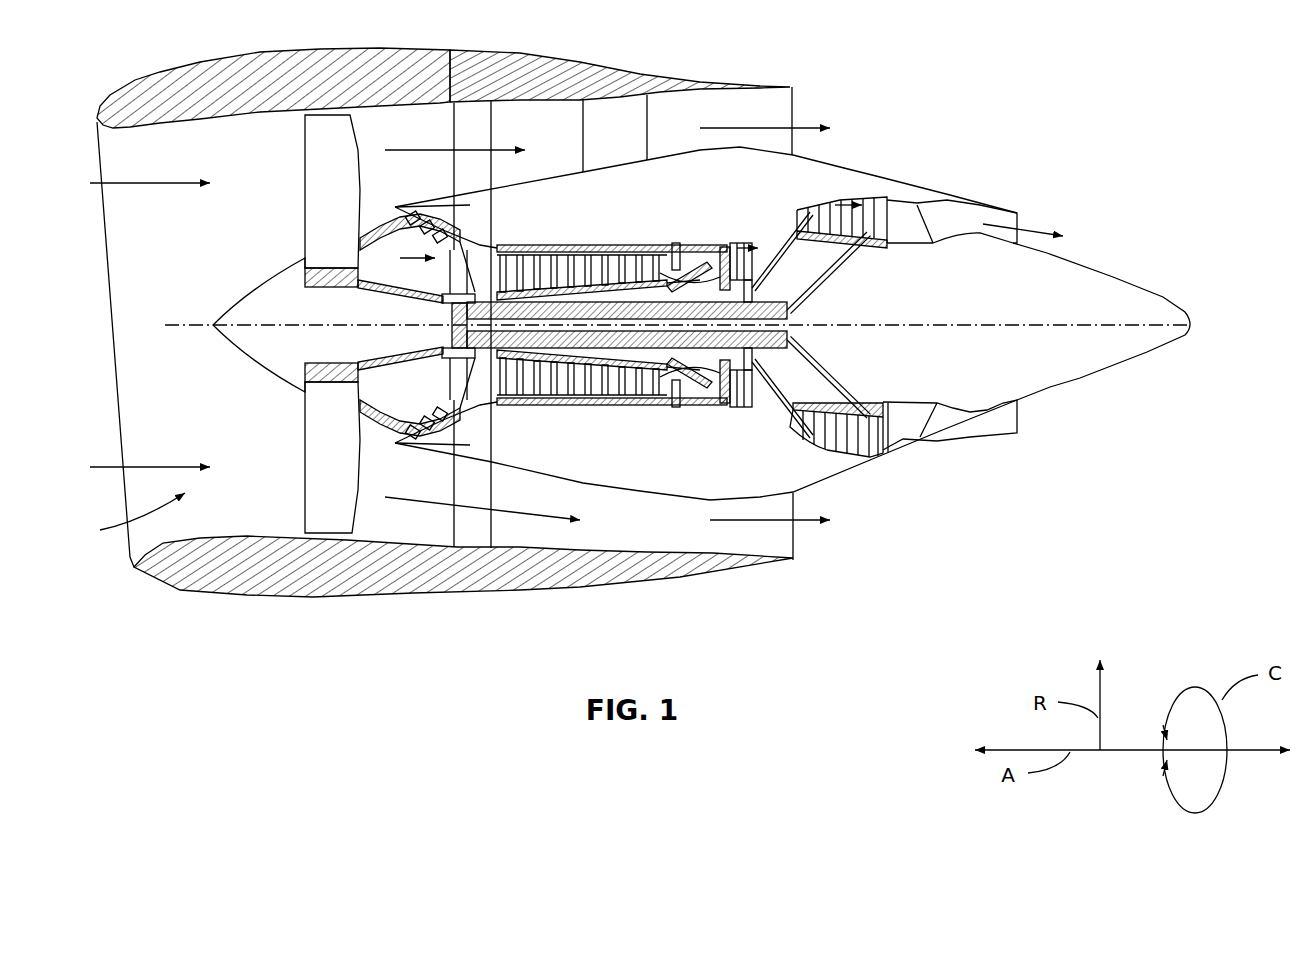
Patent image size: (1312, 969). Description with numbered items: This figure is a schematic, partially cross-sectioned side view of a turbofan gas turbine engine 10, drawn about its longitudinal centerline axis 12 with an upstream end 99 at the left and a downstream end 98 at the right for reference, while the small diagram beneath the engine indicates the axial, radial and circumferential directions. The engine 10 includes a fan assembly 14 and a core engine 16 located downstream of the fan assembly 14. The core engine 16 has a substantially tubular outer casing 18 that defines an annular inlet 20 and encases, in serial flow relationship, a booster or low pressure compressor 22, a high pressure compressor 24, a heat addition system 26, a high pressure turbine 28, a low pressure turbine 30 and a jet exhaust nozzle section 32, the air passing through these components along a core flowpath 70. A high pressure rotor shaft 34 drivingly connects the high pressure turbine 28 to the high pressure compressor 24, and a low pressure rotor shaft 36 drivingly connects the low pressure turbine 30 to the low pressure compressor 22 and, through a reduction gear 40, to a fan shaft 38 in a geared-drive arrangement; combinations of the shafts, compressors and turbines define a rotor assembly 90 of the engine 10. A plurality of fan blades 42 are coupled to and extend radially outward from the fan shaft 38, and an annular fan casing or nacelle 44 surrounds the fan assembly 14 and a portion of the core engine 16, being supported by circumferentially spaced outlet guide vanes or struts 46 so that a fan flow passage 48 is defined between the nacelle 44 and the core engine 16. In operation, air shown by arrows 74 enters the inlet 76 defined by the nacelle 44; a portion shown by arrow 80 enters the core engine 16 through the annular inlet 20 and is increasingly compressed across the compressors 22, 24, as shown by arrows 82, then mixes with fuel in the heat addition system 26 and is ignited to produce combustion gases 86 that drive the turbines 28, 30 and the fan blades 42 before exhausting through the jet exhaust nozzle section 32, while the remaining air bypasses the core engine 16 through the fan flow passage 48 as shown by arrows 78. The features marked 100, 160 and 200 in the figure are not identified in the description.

The gas turbine engine 10 is at (930, 57).
The axial centerline axis 12 is at (968, 318).
The fan assembly 14 is at (380, 128).
The core engine 16 is at (680, 148).
The outer casing 18 is at (640, 492).
The annular inlet 20 is at (393, 433).
The low pressure compressor 22 is at (440, 398).
The high pressure compressor 24 is at (520, 397).
The heat addition system 26 is at (690, 385).
The high pressure turbine 28 is at (755, 388).
The low pressure turbine 30 is at (878, 460).
The jet exhaust nozzle section 32 is at (942, 440).
The high pressure rotor shaft 34 is at (750, 282).
The low pressure rotor shaft 36 is at (838, 262).
The fan shaft 38 is at (340, 290).
The reduction gear 40 is at (448, 300).
The fan blades 42 is at (320, 148).
The nacelle 44 is at (305, 56).
The outlet guide vanes 46 is at (500, 133).
The fan flow passage 48 is at (618, 513).
The core flowpath 70 is at (602, 258).
The flow of air 74 is at (130, 183).
The inlet 76 is at (129, 518).
The bypass air 78 is at (437, 152).
The core air flow 80 is at (378, 216).
The compressed air 82 is at (500, 250).
The combustion gases 86 is at (740, 244).
The rotor assembly 90 is at (575, 252).
The downstream end 98 is at (1205, 312).
The upstream end 99 is at (92, 320).
The fan hub airflow 100 is at (398, 255).
The hub flowpath 160 is at (413, 356).
The nacelle panel 200 is at (607, 130).